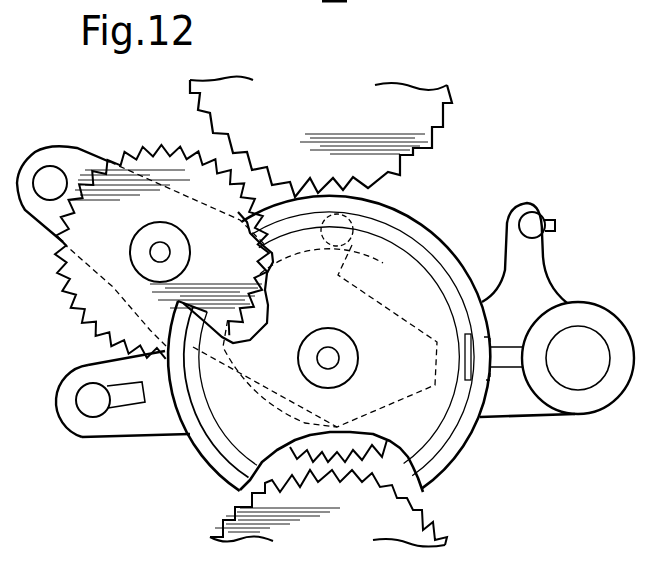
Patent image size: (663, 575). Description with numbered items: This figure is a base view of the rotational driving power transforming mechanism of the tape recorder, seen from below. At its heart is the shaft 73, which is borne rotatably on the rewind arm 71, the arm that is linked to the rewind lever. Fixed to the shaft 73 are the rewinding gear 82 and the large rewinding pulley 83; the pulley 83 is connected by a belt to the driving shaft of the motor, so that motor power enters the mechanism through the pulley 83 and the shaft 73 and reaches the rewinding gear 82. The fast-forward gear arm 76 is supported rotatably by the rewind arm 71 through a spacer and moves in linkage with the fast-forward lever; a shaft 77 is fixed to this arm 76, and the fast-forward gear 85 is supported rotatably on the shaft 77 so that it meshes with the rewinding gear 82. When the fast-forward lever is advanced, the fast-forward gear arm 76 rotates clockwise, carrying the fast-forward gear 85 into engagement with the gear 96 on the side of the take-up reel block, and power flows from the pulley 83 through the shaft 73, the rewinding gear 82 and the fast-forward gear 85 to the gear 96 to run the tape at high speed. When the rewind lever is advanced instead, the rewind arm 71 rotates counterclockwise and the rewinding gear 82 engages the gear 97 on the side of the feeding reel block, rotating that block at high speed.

The rewind arm 71 is at (150, 437).
The shaft 73 is at (332, 362).
The fast-forward gear arm 76 is at (88, 158).
The shaft 77 is at (152, 250).
The rewinding gear 82 is at (255, 322).
The rewinding pulley 83 is at (450, 252).
The fast-forward gear 85 is at (63, 290).
The gear 96 is at (199, 112).
The gear 97 is at (427, 515).